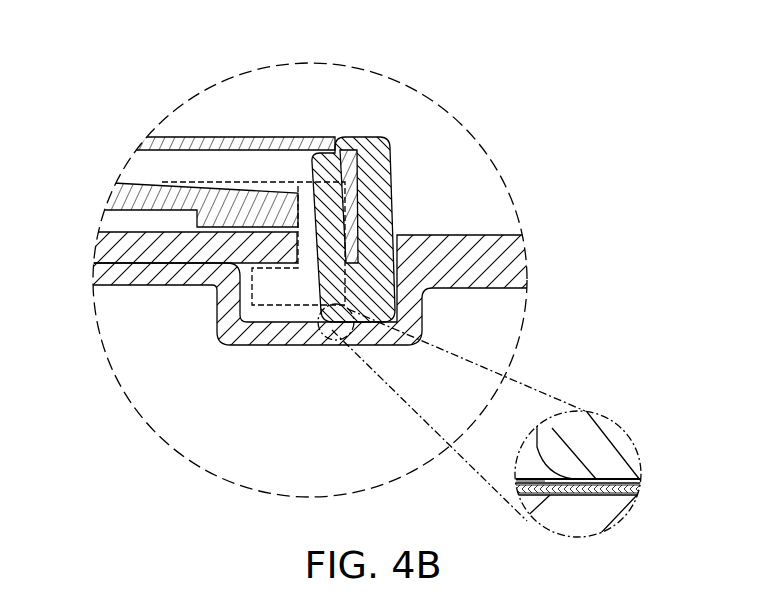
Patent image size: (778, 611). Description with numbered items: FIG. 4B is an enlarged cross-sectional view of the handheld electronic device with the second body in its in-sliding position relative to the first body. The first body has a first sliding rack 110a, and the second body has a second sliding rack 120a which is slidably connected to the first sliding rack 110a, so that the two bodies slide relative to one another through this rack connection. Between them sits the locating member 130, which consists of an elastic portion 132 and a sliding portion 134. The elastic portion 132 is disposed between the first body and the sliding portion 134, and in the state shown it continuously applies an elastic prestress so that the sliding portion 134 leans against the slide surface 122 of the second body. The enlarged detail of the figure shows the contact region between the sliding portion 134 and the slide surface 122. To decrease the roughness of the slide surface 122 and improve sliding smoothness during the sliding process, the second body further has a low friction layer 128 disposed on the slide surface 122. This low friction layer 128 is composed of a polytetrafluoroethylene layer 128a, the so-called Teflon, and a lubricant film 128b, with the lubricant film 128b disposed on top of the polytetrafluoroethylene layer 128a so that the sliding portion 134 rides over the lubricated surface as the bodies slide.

The first sliding rack 110a is at (160, 192).
The second sliding rack 120a is at (135, 277).
The slide surface 122 is at (533, 481).
The low friction layer 128 is at (629, 482).
The polytetrafluoroethylene layer 128a is at (707, 461).
The lubricant film 128b is at (642, 482).
The locating member 130 is at (396, 240).
The elastic portion 132 is at (225, 137).
The sliding portion 134 is at (362, 153).